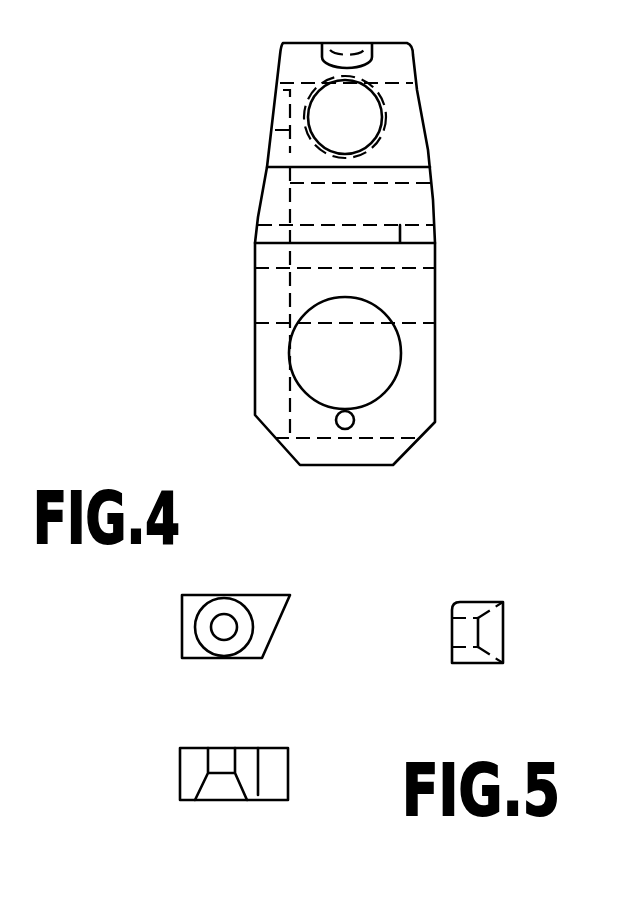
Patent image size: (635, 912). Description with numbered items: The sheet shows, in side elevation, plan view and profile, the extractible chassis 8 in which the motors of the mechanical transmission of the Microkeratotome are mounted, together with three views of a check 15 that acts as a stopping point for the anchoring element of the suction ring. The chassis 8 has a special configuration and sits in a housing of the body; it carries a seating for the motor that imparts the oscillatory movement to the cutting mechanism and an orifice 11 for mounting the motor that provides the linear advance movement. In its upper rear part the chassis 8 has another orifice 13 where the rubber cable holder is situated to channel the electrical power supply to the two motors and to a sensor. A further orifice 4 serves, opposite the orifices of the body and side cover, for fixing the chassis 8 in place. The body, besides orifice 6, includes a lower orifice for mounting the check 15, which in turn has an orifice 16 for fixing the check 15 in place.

In FIG. 4, the tool holder body 4 is at (422, 255).
In FIG. 4, the chassis 8 is at (428, 150).
In FIG. 4, the orifice 13 is at (337, 118).
In FIG. 4, the orifice 11 is at (338, 360).
In FIG. 5, the orifice 6 is at (223, 633).
In FIG. 5, the check 15 is at (272, 605).
In FIG. 5, the orifice 16 is at (470, 633).